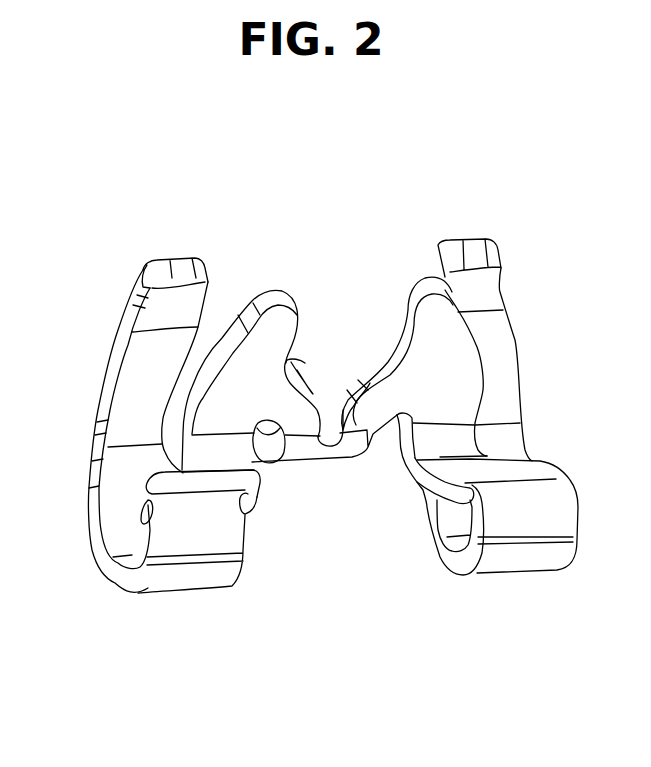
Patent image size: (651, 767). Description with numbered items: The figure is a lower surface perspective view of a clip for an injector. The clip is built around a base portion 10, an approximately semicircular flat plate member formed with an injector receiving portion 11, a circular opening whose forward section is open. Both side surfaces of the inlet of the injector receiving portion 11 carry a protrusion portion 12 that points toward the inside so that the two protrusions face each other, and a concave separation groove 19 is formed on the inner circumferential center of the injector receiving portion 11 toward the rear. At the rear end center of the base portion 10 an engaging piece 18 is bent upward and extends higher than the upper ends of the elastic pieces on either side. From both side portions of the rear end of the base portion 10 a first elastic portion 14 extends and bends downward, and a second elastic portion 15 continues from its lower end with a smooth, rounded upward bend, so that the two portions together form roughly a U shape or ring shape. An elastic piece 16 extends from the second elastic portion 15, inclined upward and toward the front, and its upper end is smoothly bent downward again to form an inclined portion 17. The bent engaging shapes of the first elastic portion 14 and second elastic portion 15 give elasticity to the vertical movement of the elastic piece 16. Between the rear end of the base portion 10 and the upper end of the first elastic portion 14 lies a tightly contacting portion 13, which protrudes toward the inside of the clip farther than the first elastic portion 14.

The base portion 10 is at (270, 342).
The injector receiving portion 11 is at (332, 357).
The protrusion portion 12 is at (296, 310).
The tightly contacting portion 13 is at (247, 485).
The first elastic portion 14 is at (203, 543).
The second elastic portion 15 is at (125, 505).
The elastic piece 16 is at (123, 377).
The inclined portion 17 is at (155, 305).
The engaging piece 18 is at (308, 382).
The separation groove 19 is at (338, 449).